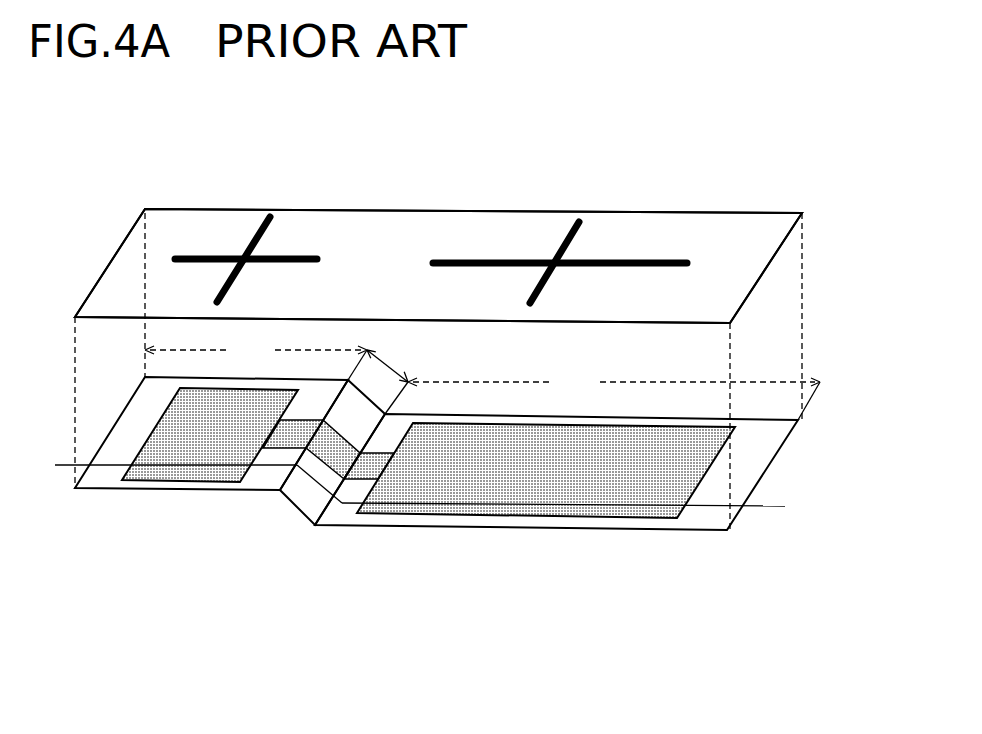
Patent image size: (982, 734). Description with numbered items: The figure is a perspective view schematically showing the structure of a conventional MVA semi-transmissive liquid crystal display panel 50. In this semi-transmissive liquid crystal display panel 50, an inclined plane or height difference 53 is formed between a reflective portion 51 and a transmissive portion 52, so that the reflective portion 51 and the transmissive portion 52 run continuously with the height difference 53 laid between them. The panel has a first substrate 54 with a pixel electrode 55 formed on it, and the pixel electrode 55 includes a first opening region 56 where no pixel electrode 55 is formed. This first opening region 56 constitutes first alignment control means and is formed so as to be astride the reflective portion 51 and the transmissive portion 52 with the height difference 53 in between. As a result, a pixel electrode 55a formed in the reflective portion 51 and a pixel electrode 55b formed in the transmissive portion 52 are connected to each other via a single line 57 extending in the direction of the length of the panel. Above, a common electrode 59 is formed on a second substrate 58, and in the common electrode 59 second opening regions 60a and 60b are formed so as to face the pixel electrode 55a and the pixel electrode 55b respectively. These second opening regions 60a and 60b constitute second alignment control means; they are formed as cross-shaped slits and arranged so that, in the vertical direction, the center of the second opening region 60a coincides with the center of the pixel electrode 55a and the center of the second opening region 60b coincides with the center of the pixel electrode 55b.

The semi-transmissive liquid crystal display panel 50 is at (97, 129).
The reflective portion 51 is at (256, 358).
The transmissive portion 52 is at (614, 394).
The height difference 53 is at (395, 376).
The first substrate 54 is at (793, 458).
The pixel electrode 55 is at (247, 513).
The pixel electrode 55a is at (202, 472).
The pixel electrode 55b is at (373, 528).
The first opening region 56 is at (365, 485).
The line 57 is at (390, 467).
The second substrate 58 is at (805, 210).
The common electrode 59 is at (410, 235).
The second opening region 60a is at (271, 217).
The second opening region 60b is at (581, 228).